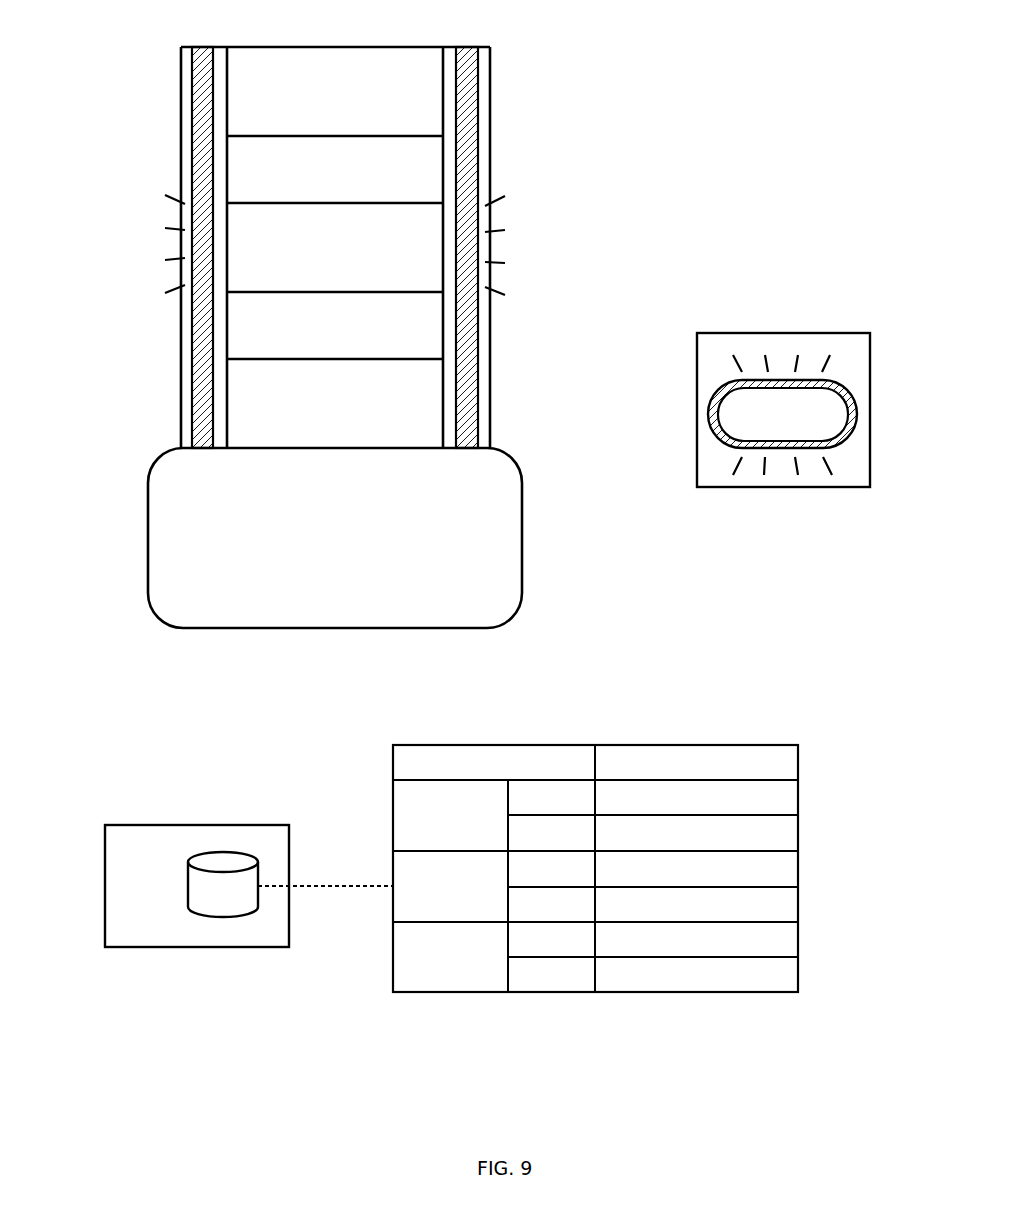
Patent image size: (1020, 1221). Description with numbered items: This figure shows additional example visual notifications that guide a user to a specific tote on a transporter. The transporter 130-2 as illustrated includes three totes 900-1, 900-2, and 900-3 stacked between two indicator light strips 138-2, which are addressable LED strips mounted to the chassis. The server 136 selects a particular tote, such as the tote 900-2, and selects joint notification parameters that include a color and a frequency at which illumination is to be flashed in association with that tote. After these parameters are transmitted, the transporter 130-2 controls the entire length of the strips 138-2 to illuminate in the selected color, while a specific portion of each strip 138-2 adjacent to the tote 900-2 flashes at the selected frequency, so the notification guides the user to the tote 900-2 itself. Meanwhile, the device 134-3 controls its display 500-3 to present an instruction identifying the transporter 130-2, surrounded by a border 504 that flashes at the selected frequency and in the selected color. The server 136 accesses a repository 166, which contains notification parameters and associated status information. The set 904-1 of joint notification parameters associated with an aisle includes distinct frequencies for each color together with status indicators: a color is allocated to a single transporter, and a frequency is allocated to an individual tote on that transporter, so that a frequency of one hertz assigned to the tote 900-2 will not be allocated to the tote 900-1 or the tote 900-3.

The transporter 130-2 is at (142, 618).
The light strips 138-2 is at (193, 128).
The tote 900-1 is at (335, 108).
The tote 900-2 is at (335, 247).
The tote 900-3 is at (335, 388).
The device 134-3 is at (686, 352).
The display 500-3 is at (783, 340).
The border 504 is at (855, 408).
The set of joint notification parameters 904-1 is at (799, 745).
The server 136 is at (249, 886).
The repository 166 is at (223, 884).